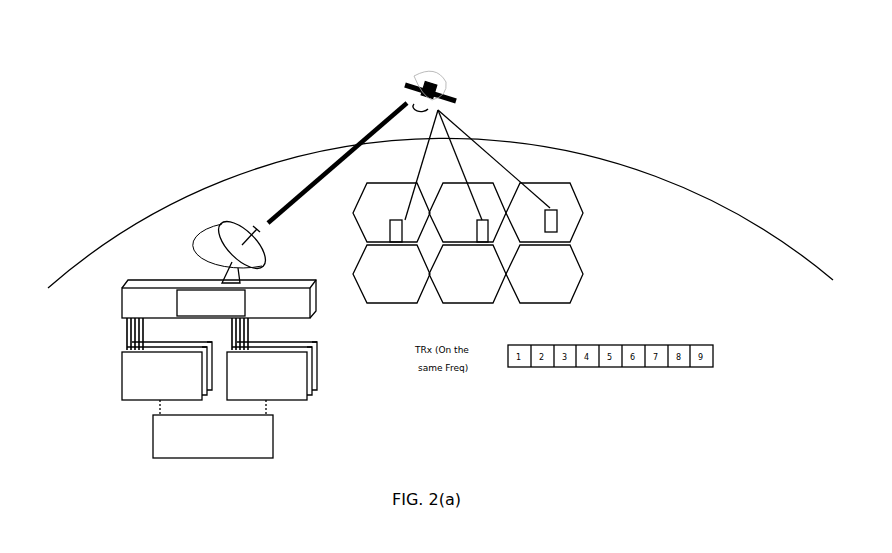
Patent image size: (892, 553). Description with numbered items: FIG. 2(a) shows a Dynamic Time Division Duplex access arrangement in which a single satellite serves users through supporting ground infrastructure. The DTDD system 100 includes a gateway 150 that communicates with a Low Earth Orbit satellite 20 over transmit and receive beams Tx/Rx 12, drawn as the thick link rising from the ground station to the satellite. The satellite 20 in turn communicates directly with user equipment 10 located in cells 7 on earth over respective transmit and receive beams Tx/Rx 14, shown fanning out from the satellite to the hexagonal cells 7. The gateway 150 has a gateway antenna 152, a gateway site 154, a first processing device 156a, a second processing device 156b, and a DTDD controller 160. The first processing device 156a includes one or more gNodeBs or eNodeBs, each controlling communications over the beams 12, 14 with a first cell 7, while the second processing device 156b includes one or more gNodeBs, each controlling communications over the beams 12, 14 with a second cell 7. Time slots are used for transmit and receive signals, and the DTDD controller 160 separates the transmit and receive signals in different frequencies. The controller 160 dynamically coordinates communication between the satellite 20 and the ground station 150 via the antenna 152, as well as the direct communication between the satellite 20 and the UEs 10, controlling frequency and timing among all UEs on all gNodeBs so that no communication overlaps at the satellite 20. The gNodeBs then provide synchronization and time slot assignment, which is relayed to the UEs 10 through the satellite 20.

The DTDD system 100 is at (150, 67).
The Low Earth Orbit satellite 20 is at (412, 85).
The transmit and receive beams Tx/Rx 12 is at (300, 190).
The transmit and receive beams Tx/Rx 14 is at (467, 125).
The cells 7 is at (577, 260).
The user equipment 10 is at (558, 205).
The gateway 150 is at (152, 234).
The gateway antenna 152 is at (213, 217).
The gateway site 154 is at (122, 303).
The first processing device 156a is at (122, 373).
The second processing device 156b is at (315, 370).
The DTDD controller 160 is at (153, 437).